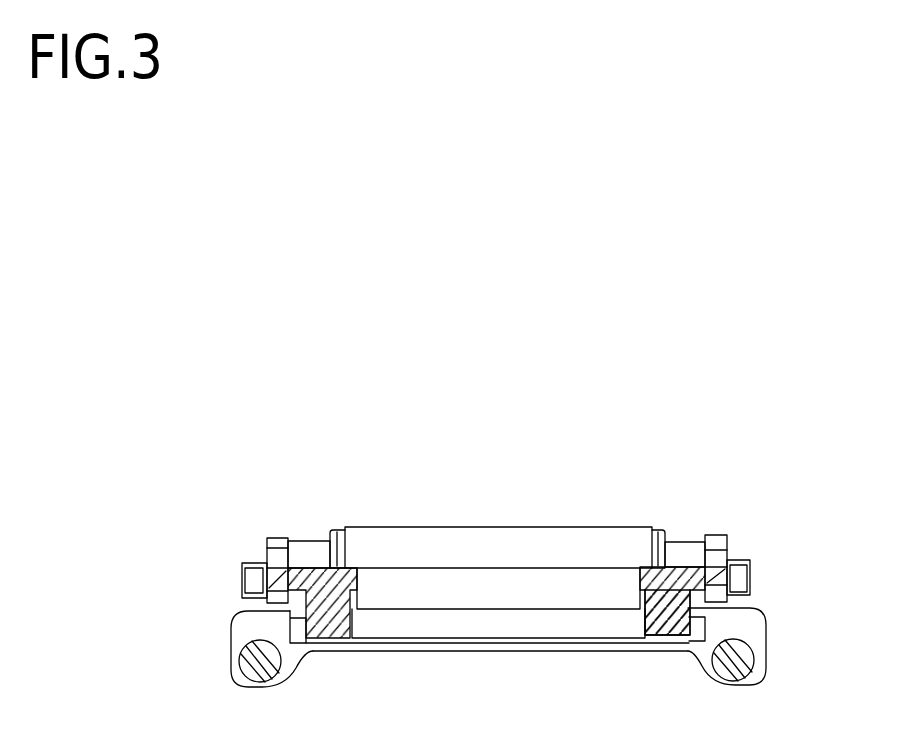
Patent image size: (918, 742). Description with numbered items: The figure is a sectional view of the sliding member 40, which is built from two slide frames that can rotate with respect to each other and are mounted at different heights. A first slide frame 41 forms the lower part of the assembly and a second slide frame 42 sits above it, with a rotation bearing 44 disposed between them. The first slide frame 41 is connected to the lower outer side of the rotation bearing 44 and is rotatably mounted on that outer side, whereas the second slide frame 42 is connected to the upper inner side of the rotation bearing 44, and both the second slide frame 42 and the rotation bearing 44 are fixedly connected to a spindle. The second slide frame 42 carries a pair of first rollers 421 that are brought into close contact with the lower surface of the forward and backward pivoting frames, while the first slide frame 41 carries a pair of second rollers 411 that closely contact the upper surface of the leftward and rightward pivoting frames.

The sliding member 40 is at (518, 362).
The first slide frame 41 is at (753, 623).
The second rollers 411 is at (752, 660).
The second slide frame 42 is at (679, 585).
The first rollers 421 is at (590, 540).
The rotation bearing 44 is at (663, 620).